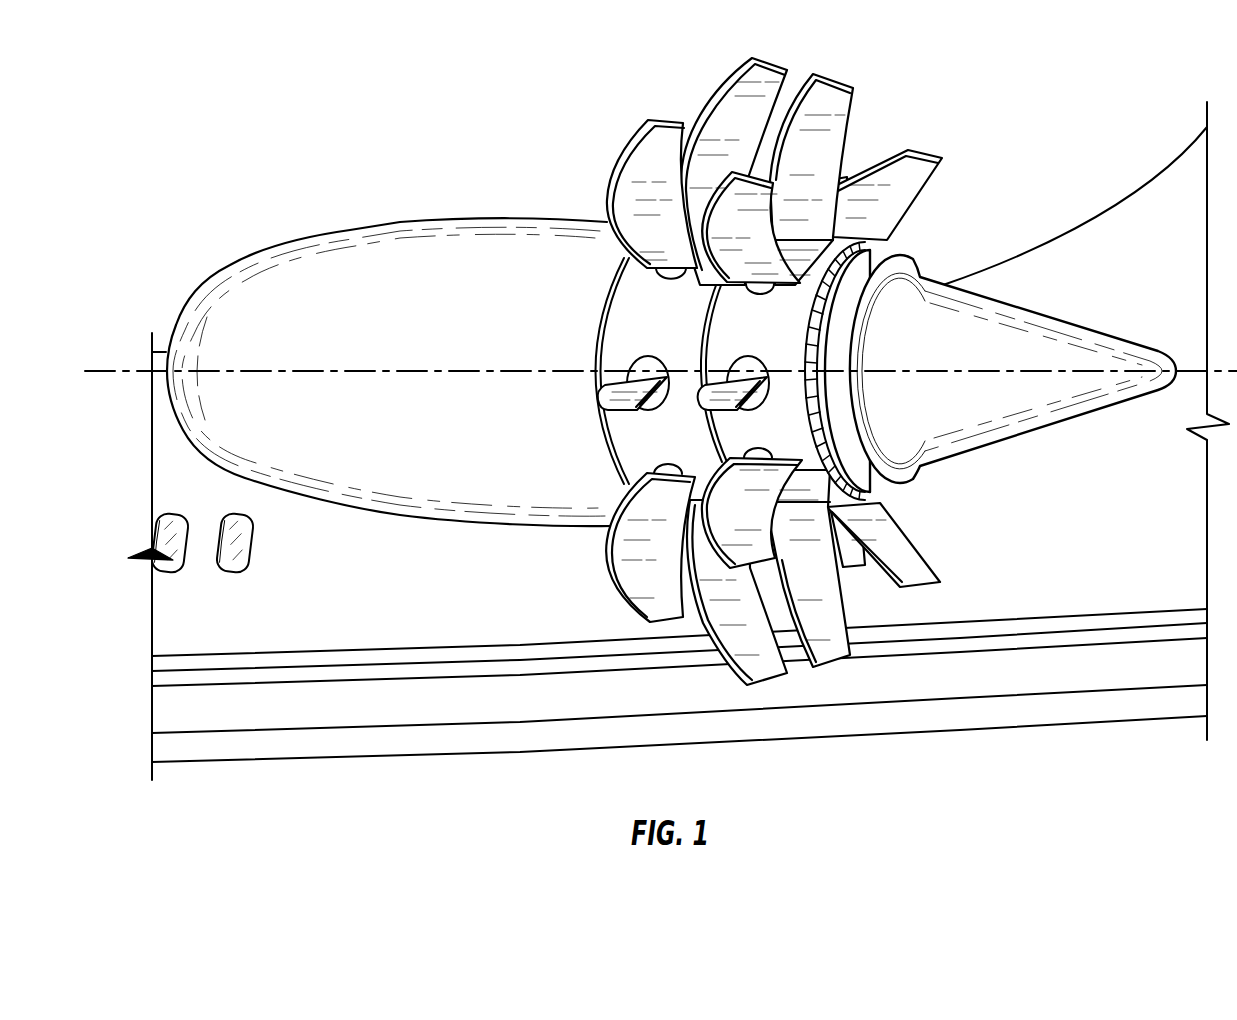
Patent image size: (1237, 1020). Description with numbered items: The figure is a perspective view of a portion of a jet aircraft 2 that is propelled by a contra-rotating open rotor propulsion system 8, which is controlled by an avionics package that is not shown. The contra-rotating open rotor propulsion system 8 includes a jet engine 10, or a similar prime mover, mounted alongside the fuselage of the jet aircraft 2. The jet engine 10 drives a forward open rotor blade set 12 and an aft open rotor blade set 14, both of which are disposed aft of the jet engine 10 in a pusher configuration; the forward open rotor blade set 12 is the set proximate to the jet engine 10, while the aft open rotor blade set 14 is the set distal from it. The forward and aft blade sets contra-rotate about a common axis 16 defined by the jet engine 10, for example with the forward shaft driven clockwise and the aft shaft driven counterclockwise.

The jet aircraft 2 is at (369, 584).
The contra-rotating open rotor propulsion system 8 is at (671, 344).
The jet engine 10 is at (409, 337).
The forward open rotor blade set 12 is at (770, 53).
The aft open rotor blade set 14 is at (892, 42).
The common axis 16 is at (1188, 371).